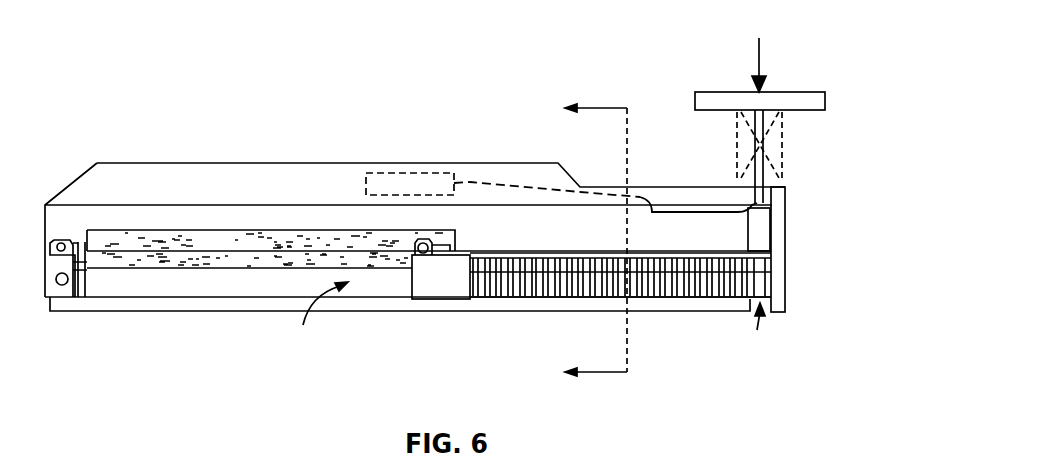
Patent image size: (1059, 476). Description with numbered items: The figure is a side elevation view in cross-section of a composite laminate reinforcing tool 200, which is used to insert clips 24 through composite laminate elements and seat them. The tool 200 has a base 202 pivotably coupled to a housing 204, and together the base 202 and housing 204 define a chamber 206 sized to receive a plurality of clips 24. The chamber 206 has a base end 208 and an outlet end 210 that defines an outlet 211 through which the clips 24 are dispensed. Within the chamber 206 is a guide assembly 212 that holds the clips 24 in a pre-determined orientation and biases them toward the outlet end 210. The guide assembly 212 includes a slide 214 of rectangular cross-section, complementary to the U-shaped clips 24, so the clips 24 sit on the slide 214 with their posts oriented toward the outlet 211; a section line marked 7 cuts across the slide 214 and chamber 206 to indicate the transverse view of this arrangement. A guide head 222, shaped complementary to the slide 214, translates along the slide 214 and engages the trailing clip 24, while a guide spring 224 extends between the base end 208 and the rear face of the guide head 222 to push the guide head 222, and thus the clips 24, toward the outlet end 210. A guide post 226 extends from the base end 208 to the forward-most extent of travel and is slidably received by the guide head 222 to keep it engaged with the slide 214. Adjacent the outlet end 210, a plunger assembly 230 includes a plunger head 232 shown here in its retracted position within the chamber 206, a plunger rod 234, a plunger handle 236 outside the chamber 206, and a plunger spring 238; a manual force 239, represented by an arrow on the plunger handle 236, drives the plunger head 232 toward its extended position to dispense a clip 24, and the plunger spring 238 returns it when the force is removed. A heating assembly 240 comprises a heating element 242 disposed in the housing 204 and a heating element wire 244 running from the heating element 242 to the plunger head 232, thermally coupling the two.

The composite laminate reinforcing tool 200 is at (271, 120).
The base 202 is at (128, 300).
The housing 204 is at (148, 183).
The chamber 206 is at (315, 322).
The base end 208 is at (87, 281).
The outlet end 210 is at (767, 283).
The outlet 211 is at (756, 345).
The guide assembly 212 is at (403, 273).
The slide 214 is at (258, 280).
The guide head 222 is at (453, 272).
The guide spring 224 is at (218, 235).
The guide post 226 is at (312, 248).
The plunger assembly 230 is at (687, 76).
The plunger head 232 is at (763, 237).
The plunger rod 234 is at (758, 147).
The plunger handle 236 is at (825, 100).
The plunger spring 238 is at (782, 145).
The manual force 239 is at (762, 62).
The heating assembly 240 is at (445, 163).
The heating element 242 is at (393, 173).
The heating element wire 244 is at (577, 192).
The clip 24 is at (525, 288).
The section line 7 is at (587, 241).